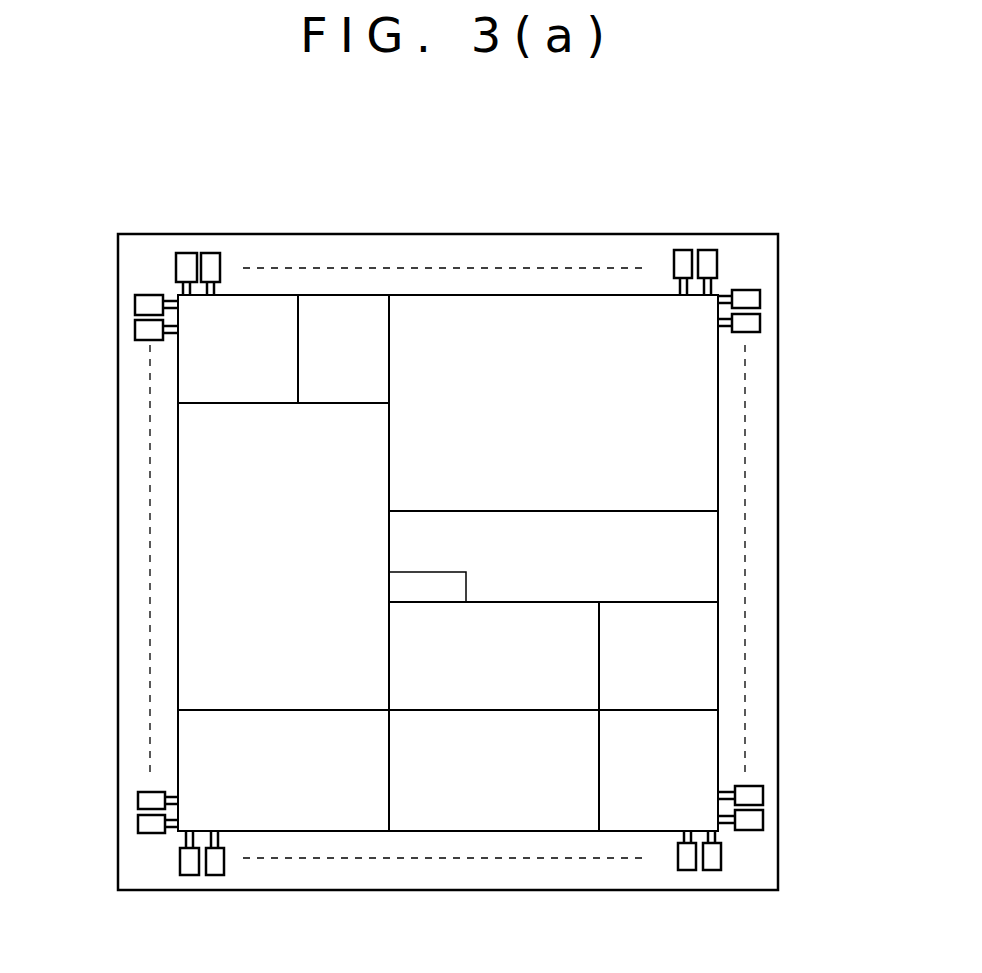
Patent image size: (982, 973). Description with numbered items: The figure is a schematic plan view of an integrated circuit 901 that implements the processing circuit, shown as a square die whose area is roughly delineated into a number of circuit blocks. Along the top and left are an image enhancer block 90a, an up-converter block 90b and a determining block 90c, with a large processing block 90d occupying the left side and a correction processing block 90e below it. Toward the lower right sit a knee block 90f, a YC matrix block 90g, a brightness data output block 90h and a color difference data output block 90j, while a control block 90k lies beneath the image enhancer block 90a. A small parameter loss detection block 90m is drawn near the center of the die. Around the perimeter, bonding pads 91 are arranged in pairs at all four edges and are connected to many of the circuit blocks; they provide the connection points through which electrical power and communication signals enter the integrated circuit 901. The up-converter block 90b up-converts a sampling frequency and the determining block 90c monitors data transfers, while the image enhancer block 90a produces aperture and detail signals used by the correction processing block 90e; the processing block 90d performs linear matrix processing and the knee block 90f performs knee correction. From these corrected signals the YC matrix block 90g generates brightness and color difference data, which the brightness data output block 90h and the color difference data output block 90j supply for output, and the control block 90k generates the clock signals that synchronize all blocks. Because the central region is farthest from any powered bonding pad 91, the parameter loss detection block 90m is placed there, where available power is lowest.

The integrated circuit 901 is at (327, 232).
The bonding pads 91 is at (188, 262).
The image enhancer block 90a is at (553, 403).
The up-converter block 90b is at (343, 349).
The determining block 90c is at (238, 349).
The processing block 90d is at (283, 556).
The correction processing block 90e is at (283, 770).
The knee block 90f is at (494, 656).
The YC matrix block 90g is at (494, 770).
The brightness data output block 90h is at (658, 656).
The color difference data output block 90j is at (658, 770).
The control block 90k is at (553, 556).
The parameter loss detection block 90m is at (427, 587).